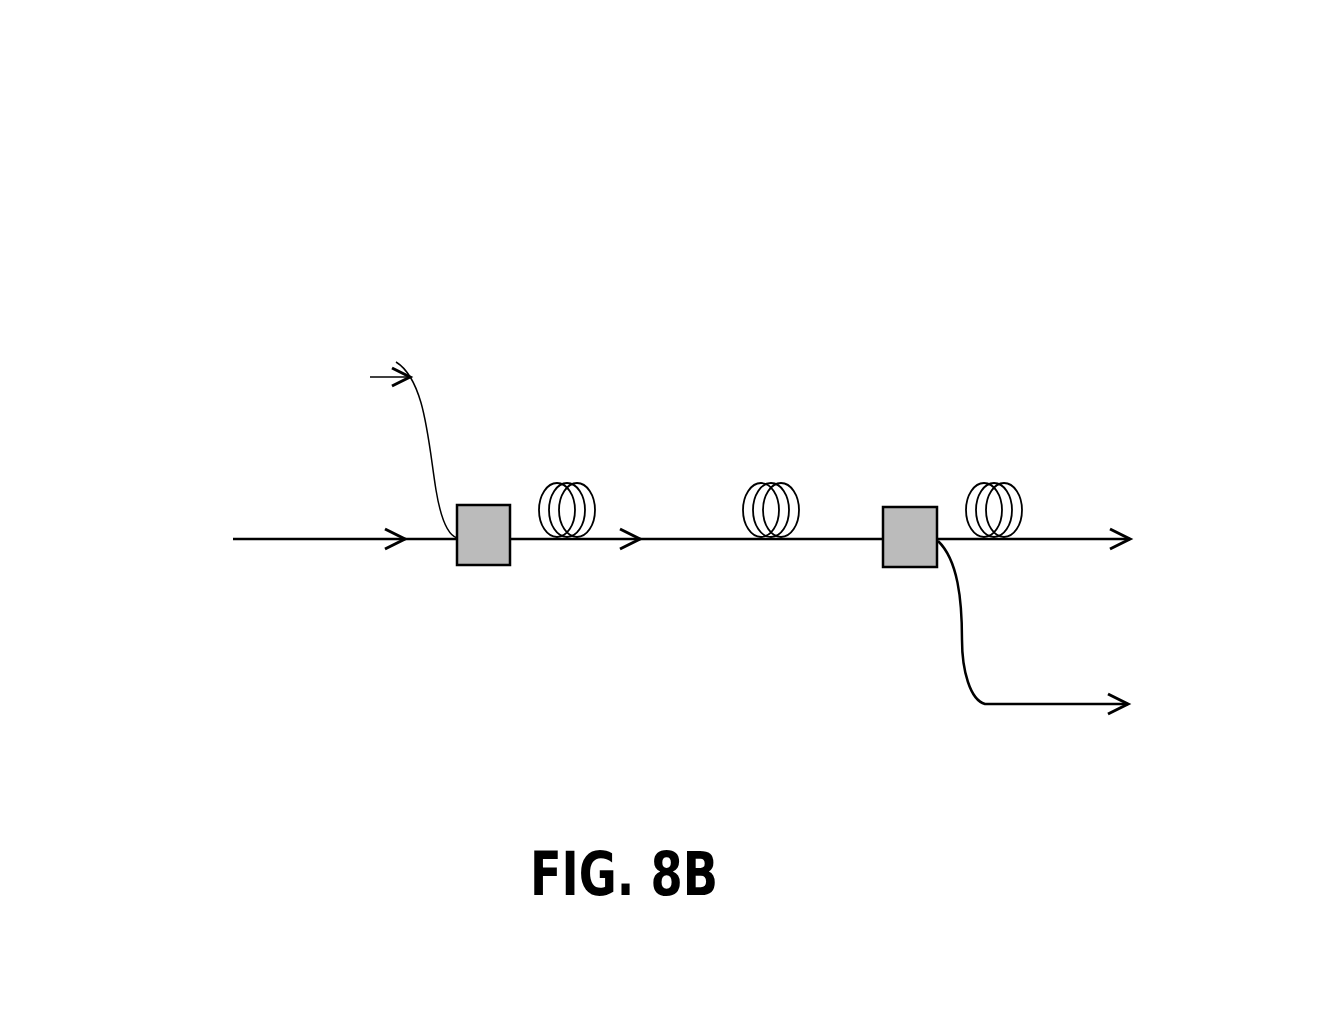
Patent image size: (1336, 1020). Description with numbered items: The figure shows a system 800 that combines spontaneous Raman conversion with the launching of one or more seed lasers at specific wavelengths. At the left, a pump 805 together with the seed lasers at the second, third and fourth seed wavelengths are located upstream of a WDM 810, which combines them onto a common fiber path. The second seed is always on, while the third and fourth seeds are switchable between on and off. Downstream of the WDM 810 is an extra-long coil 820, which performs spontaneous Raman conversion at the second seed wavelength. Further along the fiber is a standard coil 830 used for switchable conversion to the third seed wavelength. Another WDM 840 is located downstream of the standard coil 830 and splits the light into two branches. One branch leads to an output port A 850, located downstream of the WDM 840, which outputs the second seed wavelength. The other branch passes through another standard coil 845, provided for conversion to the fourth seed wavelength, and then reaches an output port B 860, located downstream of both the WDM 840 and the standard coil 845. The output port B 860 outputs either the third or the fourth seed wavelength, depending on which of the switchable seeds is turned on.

The system 800 is at (515, 155).
The pump 805 is at (150, 562).
The WDM 810 is at (494, 568).
The extra-long coil 820 is at (572, 540).
The standard coil 830 is at (762, 540).
The WDM 840 is at (898, 572).
The standard coil 845 is at (1000, 540).
The output port A 850 is at (1120, 639).
The output port B 860 is at (1136, 540).